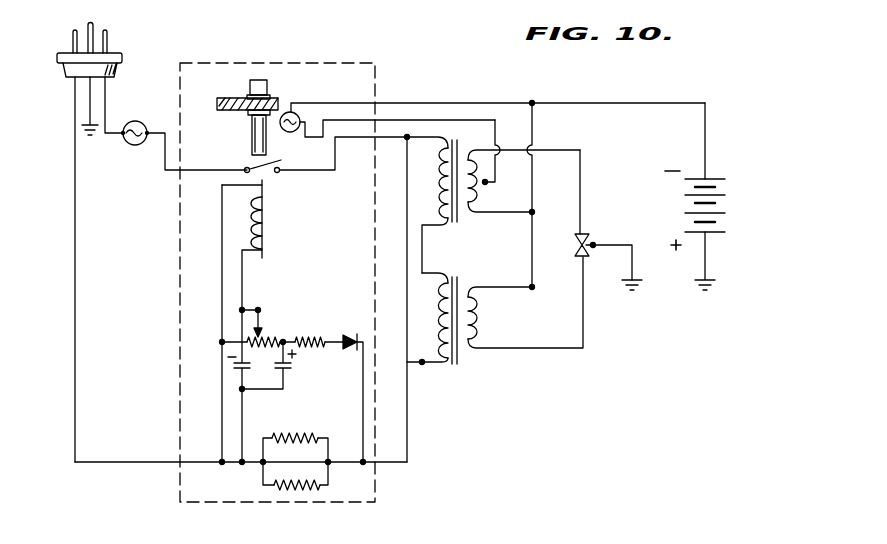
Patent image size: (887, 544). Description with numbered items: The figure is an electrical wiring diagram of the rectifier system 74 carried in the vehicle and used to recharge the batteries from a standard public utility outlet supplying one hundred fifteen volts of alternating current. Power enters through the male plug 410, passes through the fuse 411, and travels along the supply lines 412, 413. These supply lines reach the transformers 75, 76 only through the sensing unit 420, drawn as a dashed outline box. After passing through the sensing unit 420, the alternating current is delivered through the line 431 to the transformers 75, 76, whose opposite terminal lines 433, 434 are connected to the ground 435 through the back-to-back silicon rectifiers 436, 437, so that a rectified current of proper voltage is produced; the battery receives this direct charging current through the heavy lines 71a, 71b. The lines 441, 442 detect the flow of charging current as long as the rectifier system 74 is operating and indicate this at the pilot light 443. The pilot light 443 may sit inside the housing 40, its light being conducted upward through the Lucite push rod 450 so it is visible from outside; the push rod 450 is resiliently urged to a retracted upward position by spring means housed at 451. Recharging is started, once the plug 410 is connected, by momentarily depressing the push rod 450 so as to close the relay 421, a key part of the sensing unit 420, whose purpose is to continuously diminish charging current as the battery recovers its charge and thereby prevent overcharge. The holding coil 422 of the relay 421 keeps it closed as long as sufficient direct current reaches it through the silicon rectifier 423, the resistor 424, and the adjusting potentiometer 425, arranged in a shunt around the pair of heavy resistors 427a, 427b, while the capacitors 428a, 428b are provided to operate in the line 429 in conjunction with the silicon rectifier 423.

The male plug 410 is at (118, 58).
The fuse 411 is at (138, 121).
The supply line 412 is at (75, 290).
The supply line 413 is at (165, 172).
The sensing unit 420 is at (344, 55).
The rectifier system 74 is at (233, 38).
The housing 40 is at (240, 112).
The Lucite push rod 450 is at (258, 80).
The spring means housing 451 is at (270, 97).
The pilot light 443 is at (296, 132).
The relay 421 is at (279, 174).
The holding coil 422 is at (272, 243).
The adjusting potentiometer 425 is at (264, 339).
The resistor 424 is at (318, 338).
The silicon rectifier 423 is at (352, 351).
The capacitor 428a is at (240, 366).
The capacitor 428b is at (291, 372).
The line 429 is at (246, 424).
The heavy resistor 427a is at (312, 437).
The heavy resistor 427b is at (318, 490).
The line 431 is at (407, 458).
The transformer 75 is at (438, 142).
The transformer 76 is at (462, 357).
The line 441 is at (485, 120).
The line 442 is at (522, 103).
The heavy line 71a is at (534, 190).
The heavy line 71b is at (706, 128).
The terminal line 433 is at (583, 202).
The terminal line 434 is at (566, 349).
The ground 435 is at (628, 283).
The silicon rectifier 436 is at (594, 243).
The silicon rectifier 437 is at (582, 258).